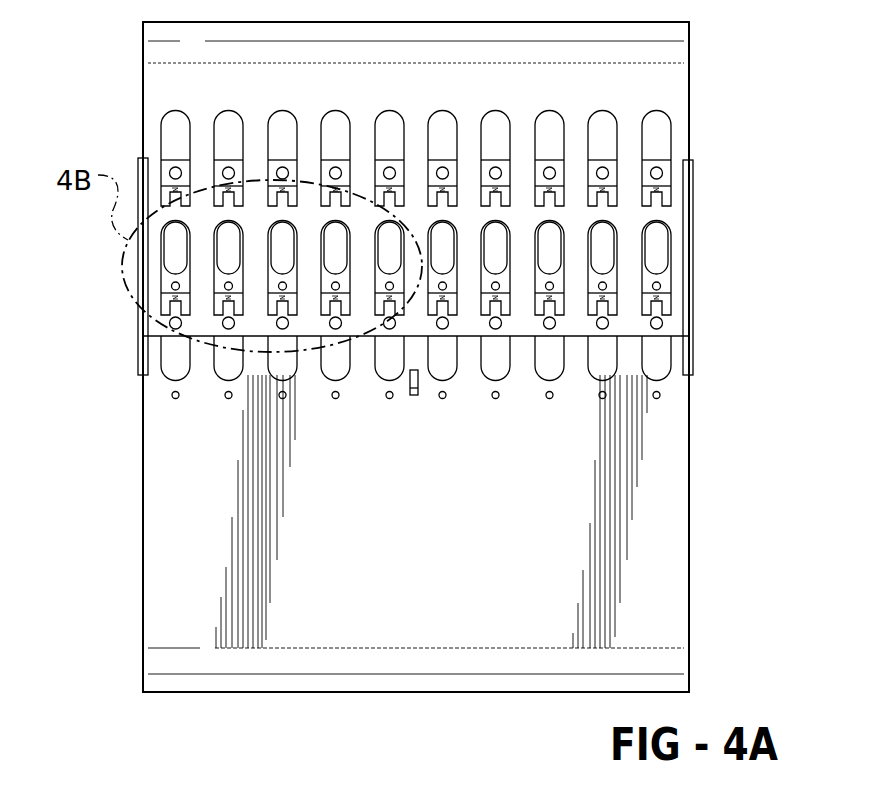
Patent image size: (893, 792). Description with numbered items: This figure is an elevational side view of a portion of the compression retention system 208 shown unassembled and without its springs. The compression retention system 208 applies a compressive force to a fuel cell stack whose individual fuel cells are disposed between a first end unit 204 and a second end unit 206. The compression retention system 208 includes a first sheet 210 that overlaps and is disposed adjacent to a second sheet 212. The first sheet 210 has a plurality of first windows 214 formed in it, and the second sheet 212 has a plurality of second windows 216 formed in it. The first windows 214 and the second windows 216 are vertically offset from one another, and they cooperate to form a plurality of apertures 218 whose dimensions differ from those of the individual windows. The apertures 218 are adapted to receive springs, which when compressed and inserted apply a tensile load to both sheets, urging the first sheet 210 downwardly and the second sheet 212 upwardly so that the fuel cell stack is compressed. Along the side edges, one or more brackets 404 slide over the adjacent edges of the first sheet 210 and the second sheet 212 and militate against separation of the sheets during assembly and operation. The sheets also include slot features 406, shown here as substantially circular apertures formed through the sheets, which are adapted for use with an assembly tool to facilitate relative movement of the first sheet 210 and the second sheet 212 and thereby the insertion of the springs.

The first end unit 204 is at (660, 20).
The second end unit 206 is at (283, 682).
The compression retention system 208 is at (124, 457).
The first sheet 210 is at (675, 86).
The second sheet 212 is at (677, 528).
The first windows 214 is at (176, 133).
The second windows 216 is at (382, 370).
The apertures 218 is at (222, 250).
The brackets 404 is at (695, 298).
The slot feature 406 is at (608, 327).